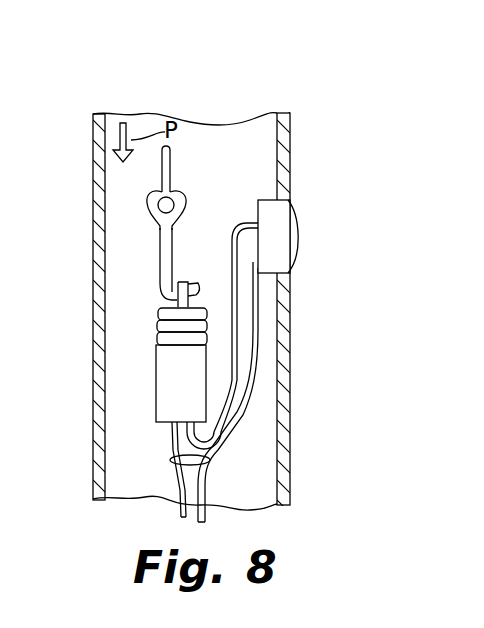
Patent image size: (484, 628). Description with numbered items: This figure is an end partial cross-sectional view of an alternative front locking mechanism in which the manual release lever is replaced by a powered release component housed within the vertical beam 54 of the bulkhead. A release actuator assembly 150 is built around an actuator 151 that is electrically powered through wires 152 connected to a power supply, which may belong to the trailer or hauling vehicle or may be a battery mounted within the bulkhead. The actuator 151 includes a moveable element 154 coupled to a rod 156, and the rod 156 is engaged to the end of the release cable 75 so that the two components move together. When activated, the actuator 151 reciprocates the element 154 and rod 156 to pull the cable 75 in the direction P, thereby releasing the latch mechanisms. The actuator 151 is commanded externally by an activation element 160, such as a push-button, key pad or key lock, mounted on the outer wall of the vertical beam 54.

The vertical beam 54 is at (283, 146).
The release cable 75 is at (132, 223).
The rod 156 is at (162, 247).
The moveable element 154 is at (166, 305).
The release actuator assembly 150 is at (125, 365).
The actuator 151 is at (166, 392).
The wires 152 is at (172, 459).
The activation element 160 is at (283, 251).